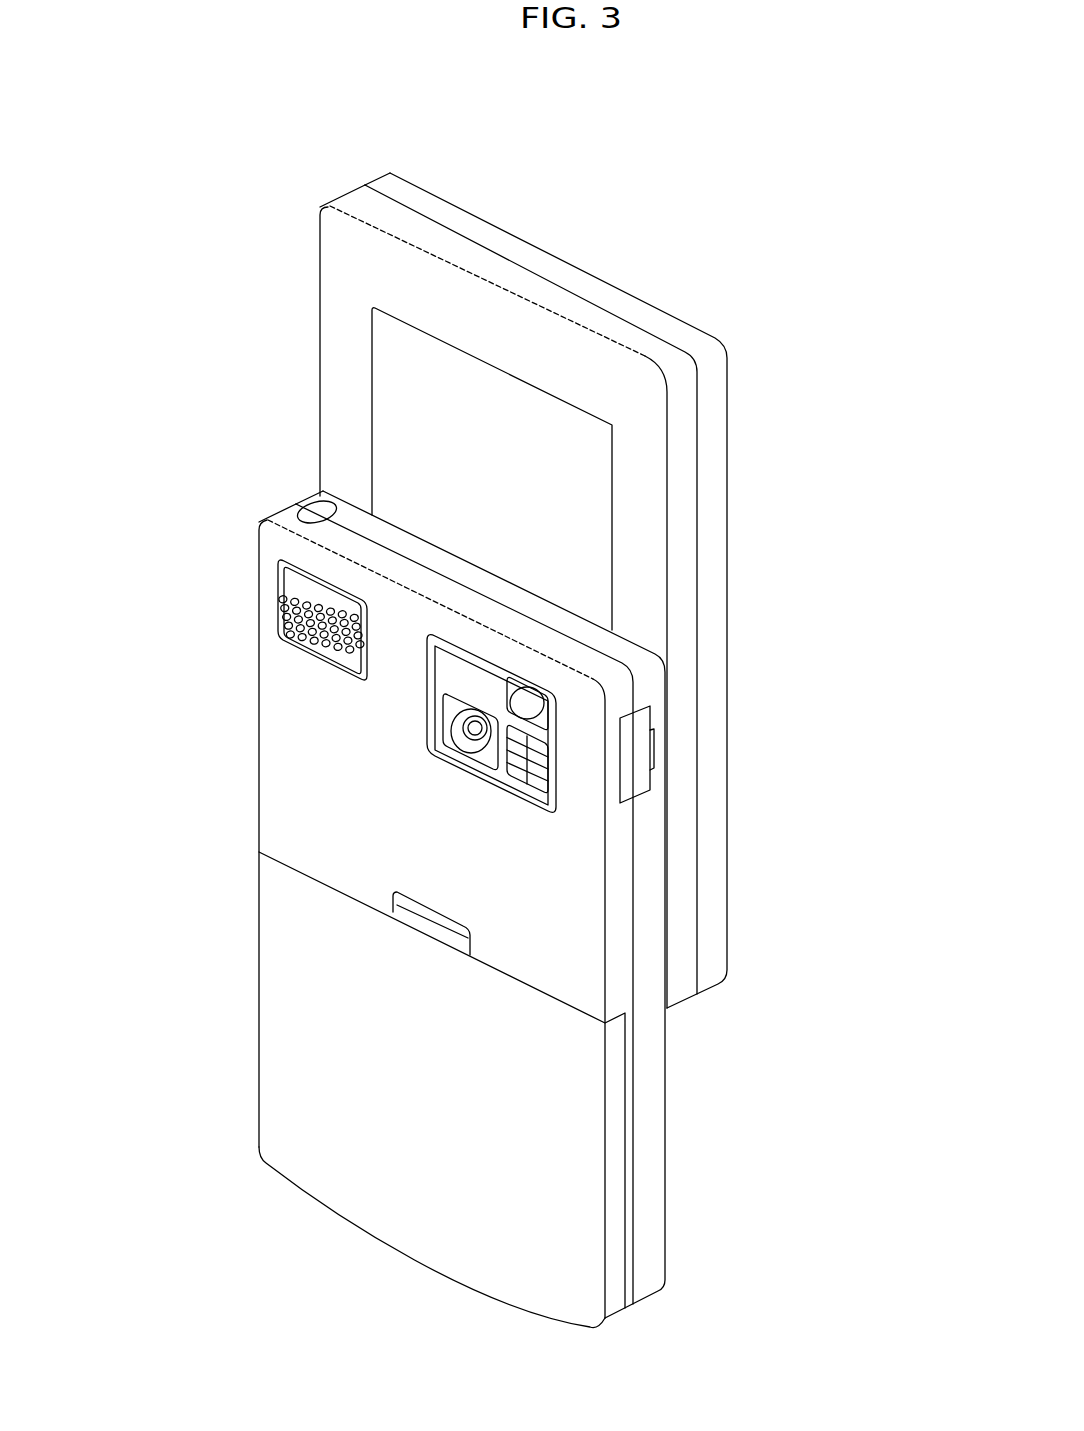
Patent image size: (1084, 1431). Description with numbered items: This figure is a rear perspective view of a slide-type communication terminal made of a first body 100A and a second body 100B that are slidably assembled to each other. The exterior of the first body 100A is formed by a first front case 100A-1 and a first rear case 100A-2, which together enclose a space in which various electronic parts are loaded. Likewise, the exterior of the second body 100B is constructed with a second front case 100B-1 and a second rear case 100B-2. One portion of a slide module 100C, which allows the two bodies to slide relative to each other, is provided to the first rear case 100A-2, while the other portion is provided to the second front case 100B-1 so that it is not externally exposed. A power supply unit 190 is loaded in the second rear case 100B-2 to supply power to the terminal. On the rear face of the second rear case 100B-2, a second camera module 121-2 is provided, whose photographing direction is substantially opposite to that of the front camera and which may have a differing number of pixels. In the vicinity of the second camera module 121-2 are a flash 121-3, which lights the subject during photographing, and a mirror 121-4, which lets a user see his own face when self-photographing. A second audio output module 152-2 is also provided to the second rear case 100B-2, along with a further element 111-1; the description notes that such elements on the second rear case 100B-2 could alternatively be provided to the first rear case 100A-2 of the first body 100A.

The first body 100A is at (422, 557).
The first front case 100A-1 is at (382, 185).
The first rear case 100A-2 is at (415, 580).
The slide module 100C is at (372, 443).
The element provided to the second rear case 111-1 is at (312, 510).
The second audio output module 152-2 is at (283, 609).
The second camera module 121-2 is at (476, 736).
The flash 121-3 is at (557, 800).
The mirror 121-4 is at (528, 702).
The power supply unit 190 is at (283, 963).
The second body 100B is at (485, 891).
The second front case 100B-1 is at (655, 1040).
The second rear case 100B-2 is at (620, 968).